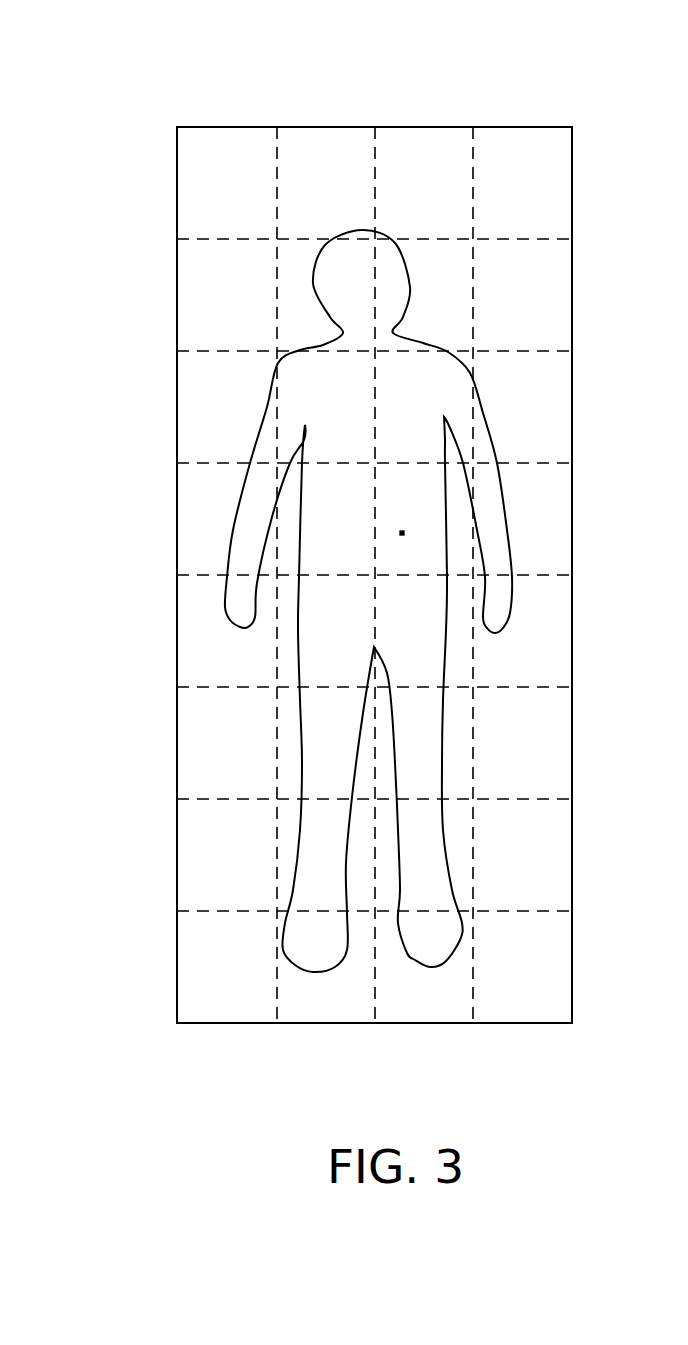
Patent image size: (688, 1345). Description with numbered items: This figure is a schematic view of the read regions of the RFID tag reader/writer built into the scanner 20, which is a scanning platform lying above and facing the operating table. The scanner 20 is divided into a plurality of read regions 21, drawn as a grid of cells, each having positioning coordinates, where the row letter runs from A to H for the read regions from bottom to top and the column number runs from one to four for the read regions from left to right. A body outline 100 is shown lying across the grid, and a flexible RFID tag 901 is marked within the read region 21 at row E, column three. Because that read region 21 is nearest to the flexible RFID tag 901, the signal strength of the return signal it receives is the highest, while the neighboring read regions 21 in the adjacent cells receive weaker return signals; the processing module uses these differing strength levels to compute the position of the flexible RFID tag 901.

The scanner 20 is at (116, 88).
The read region 21 is at (182, 183).
The user body 100 is at (350, 240).
The flexible RFID tag 901 is at (404, 532).